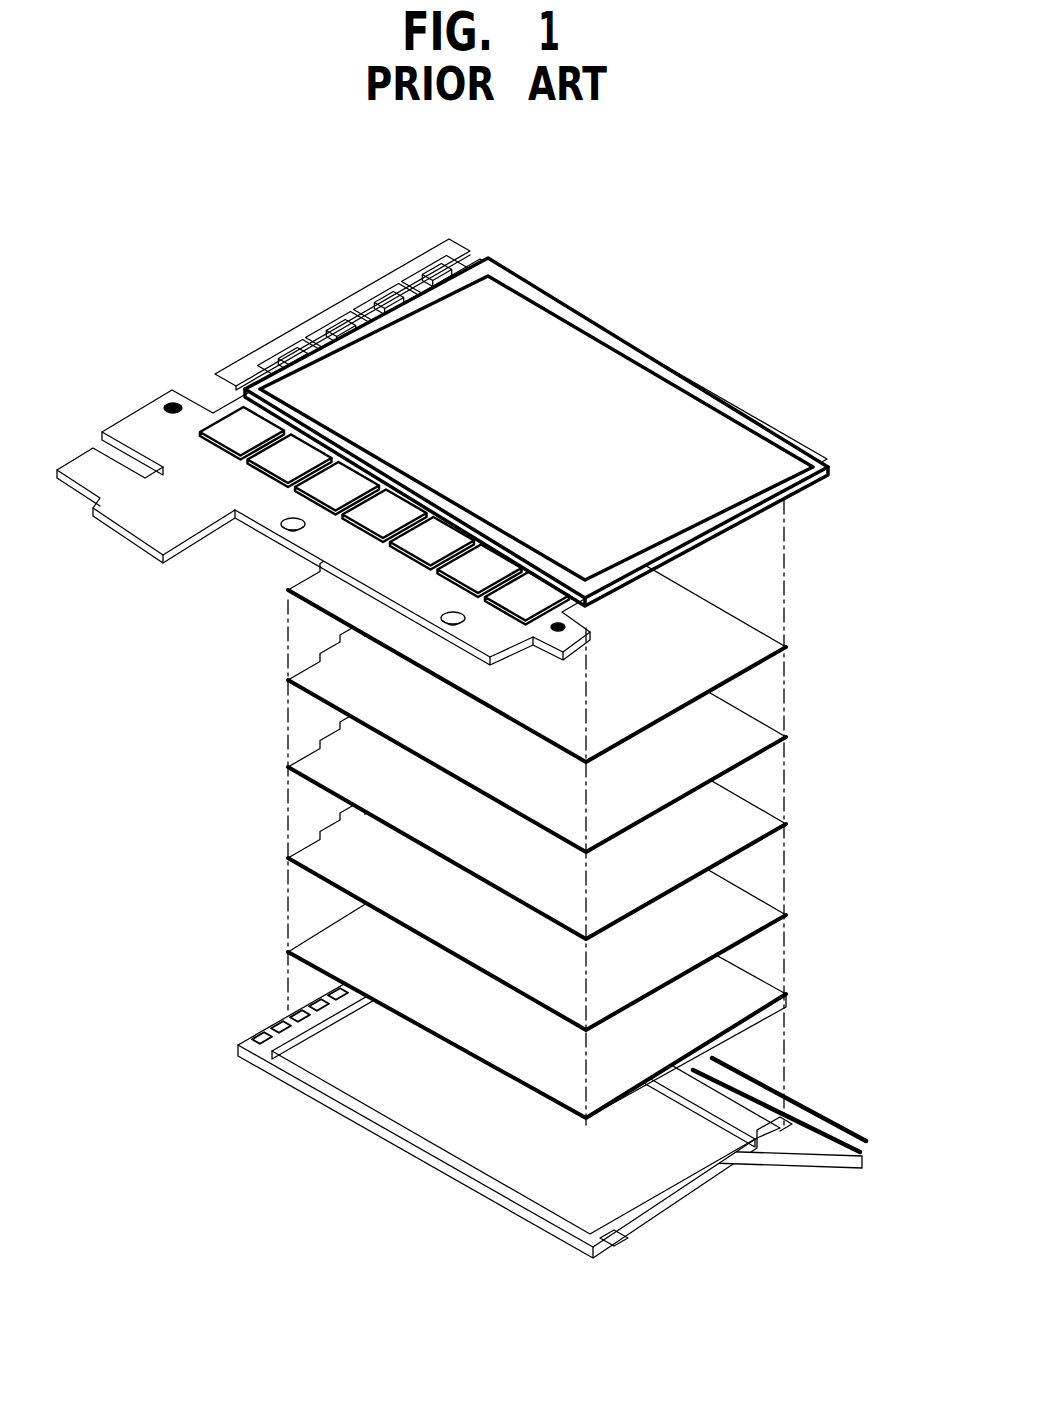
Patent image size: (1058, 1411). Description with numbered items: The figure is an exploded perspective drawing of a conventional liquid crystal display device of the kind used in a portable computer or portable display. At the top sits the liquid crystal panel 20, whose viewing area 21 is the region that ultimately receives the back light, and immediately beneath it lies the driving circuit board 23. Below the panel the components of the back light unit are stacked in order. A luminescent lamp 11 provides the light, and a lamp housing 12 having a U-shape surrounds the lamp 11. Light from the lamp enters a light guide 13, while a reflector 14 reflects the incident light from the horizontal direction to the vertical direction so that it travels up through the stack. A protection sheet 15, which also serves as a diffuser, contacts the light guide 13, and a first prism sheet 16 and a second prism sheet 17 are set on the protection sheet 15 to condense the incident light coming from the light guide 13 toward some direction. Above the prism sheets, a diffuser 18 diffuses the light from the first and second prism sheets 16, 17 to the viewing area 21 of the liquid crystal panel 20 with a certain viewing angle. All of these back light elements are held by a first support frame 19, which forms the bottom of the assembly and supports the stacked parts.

The luminescent lamp 11 is at (852, 1168).
The lamp housing 12 is at (843, 1130).
The light guide 13 is at (783, 1002).
The reflector 14 is at (395, 1105).
The protection sheet 15 is at (313, 878).
The first prism sheet 16 is at (298, 774).
The second prism sheet 17 is at (790, 737).
The diffuser 18 is at (790, 647).
The first support frame 19 is at (470, 1190).
The liquid crystal panel 20 is at (755, 415).
The viewing area 21 is at (588, 365).
The driving circuit board 23 is at (208, 353).